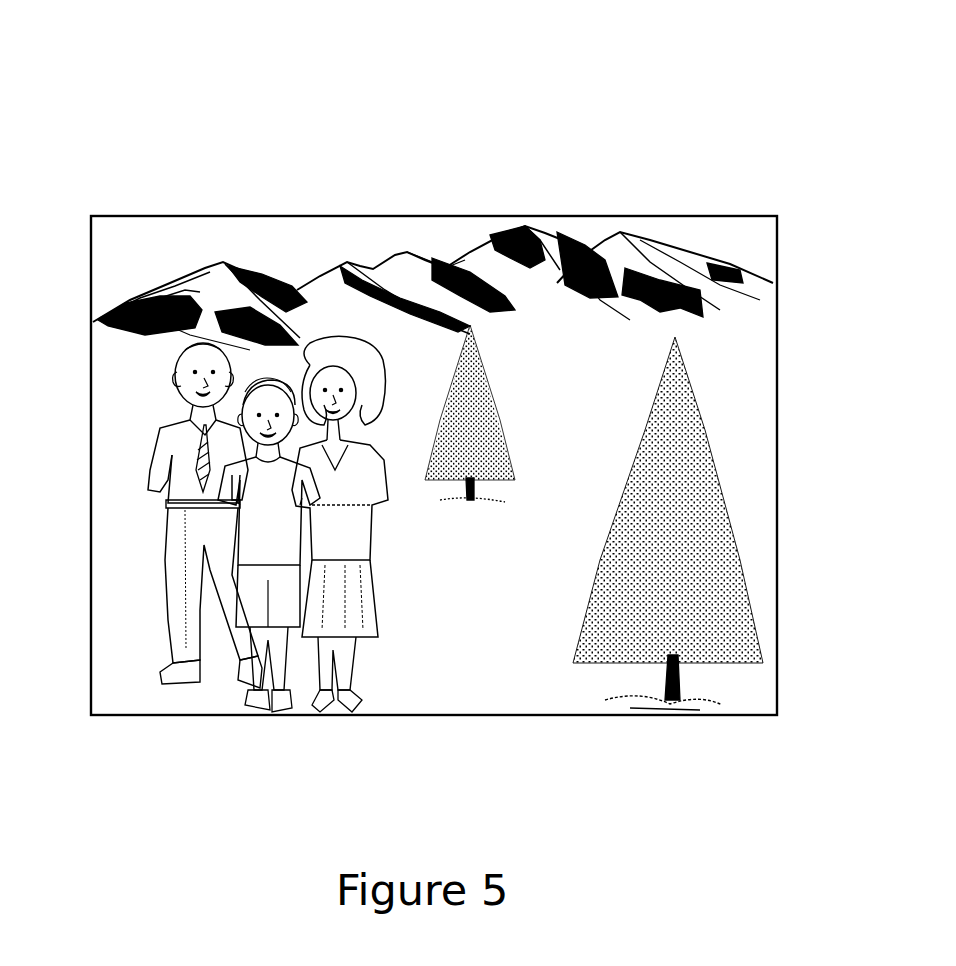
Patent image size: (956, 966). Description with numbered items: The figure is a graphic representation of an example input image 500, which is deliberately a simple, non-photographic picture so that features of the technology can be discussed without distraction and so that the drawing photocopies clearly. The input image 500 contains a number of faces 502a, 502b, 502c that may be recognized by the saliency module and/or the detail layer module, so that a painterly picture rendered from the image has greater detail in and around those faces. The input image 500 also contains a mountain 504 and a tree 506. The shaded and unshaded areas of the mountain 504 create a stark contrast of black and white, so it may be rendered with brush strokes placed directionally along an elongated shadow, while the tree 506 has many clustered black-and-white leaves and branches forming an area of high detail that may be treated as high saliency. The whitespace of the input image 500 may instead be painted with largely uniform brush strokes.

The input image 500 is at (124, 116).
The face 502a is at (162, 369).
The face 502b is at (386, 370).
The face 502c is at (280, 480).
The mountain 504 is at (738, 246).
The tree 506 is at (714, 426).